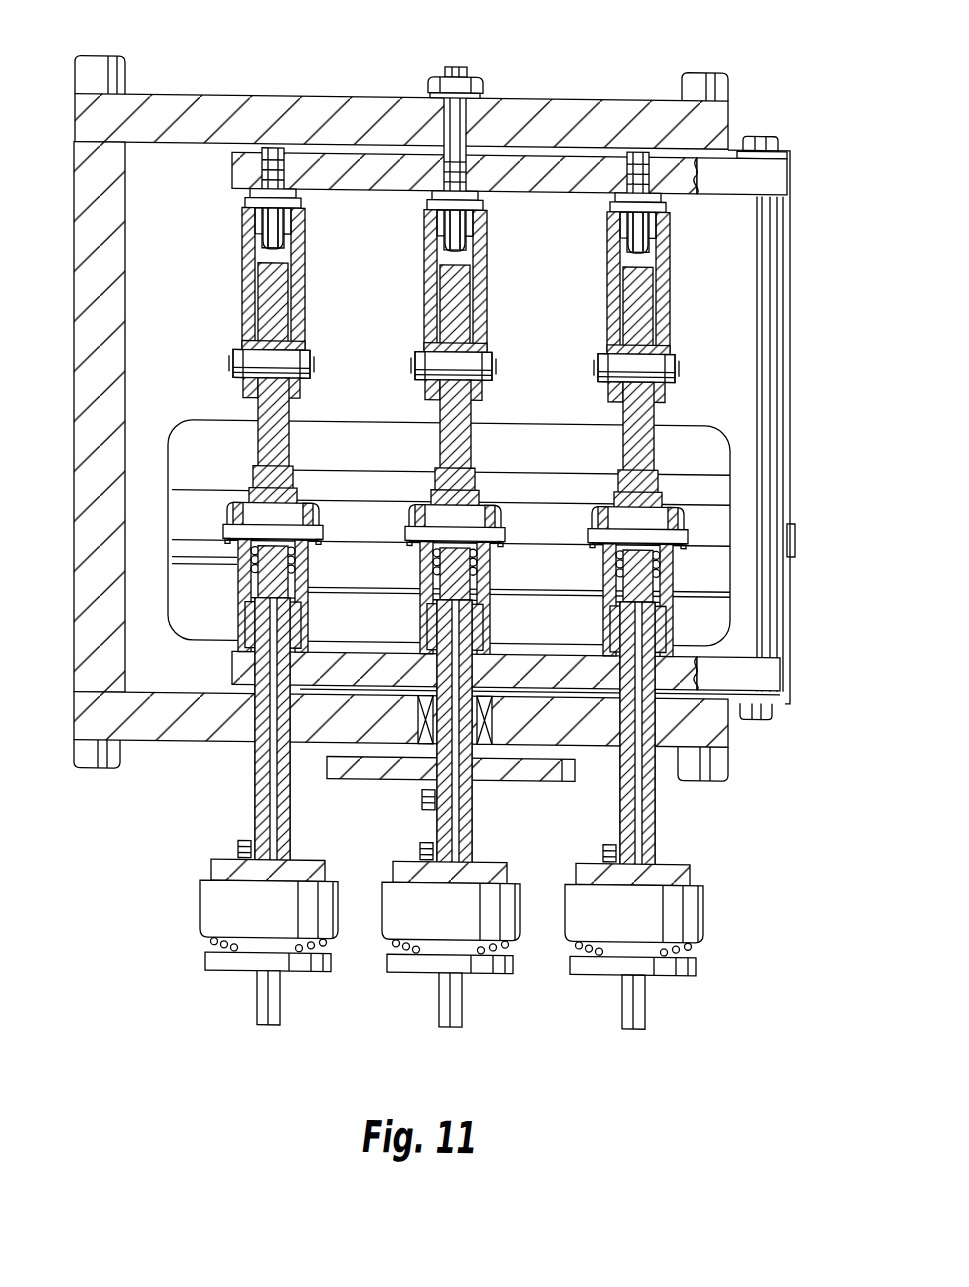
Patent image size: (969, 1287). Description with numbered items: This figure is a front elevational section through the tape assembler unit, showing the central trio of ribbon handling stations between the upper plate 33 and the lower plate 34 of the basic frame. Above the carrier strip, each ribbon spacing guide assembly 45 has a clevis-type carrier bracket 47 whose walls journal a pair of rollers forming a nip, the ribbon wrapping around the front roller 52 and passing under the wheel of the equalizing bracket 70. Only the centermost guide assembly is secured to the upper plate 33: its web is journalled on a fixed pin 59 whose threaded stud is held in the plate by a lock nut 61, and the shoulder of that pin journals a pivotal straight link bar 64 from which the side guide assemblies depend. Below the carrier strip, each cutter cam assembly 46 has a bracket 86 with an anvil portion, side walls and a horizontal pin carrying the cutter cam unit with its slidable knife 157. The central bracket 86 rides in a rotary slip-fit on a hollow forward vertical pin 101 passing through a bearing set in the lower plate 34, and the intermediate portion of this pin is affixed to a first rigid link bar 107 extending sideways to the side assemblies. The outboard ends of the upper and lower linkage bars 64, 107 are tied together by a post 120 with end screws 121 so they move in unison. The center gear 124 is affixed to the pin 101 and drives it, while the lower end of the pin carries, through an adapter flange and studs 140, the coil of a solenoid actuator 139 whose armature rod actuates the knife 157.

The upper plate 33 is at (553, 98).
The lower plate 34 is at (160, 746).
The ribbon spacing guide assembly 45 is at (492, 271).
The cutter cam assembly 46 is at (485, 599).
The carrier bracket 47 is at (308, 303).
The front roller 52 is at (298, 423).
The fixed pin 59 is at (458, 54).
The lock nut 61 is at (430, 129).
The link bar 64 is at (552, 192).
The equalizing bracket 70 is at (295, 374).
The bracket 86 is at (293, 543).
The forward vertical pin 101 is at (481, 733).
The first rigid link bar 107 is at (510, 660).
The post 120 is at (778, 448).
The end screws 121 is at (778, 136).
The center gear 124 is at (556, 782).
The solenoid actuator 139 is at (270, 920).
The studs 140 is at (370, 472).
The knife 157 is at (304, 486).